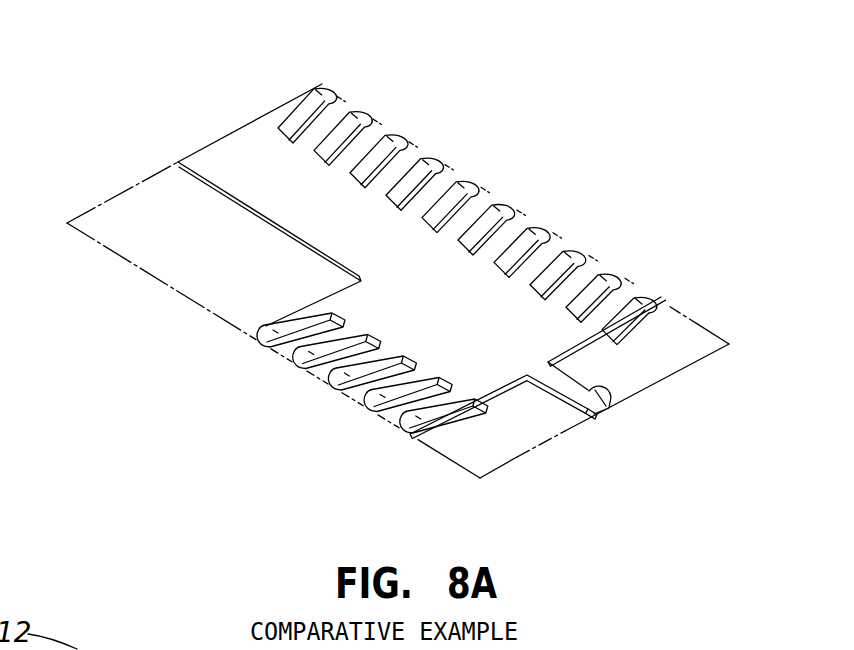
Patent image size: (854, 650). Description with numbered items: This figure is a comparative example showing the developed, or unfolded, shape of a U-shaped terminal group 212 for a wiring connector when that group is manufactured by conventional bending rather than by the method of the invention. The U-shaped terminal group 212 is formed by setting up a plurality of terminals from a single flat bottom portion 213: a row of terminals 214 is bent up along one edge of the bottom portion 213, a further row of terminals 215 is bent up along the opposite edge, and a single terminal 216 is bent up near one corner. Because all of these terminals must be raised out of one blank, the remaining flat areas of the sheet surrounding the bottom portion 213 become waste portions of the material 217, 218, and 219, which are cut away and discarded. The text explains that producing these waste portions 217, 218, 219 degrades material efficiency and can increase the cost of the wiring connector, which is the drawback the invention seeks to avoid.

The U-shaped terminal group 212 is at (175, 56).
The bottom portion 213 is at (429, 267).
The terminals 214 is at (330, 93).
The terminals 215 is at (257, 340).
The terminal 216 is at (588, 392).
The waste portion of the material 217 is at (155, 255).
The waste portion of the material 218 is at (525, 423).
The waste portion of the material 219 is at (677, 337).